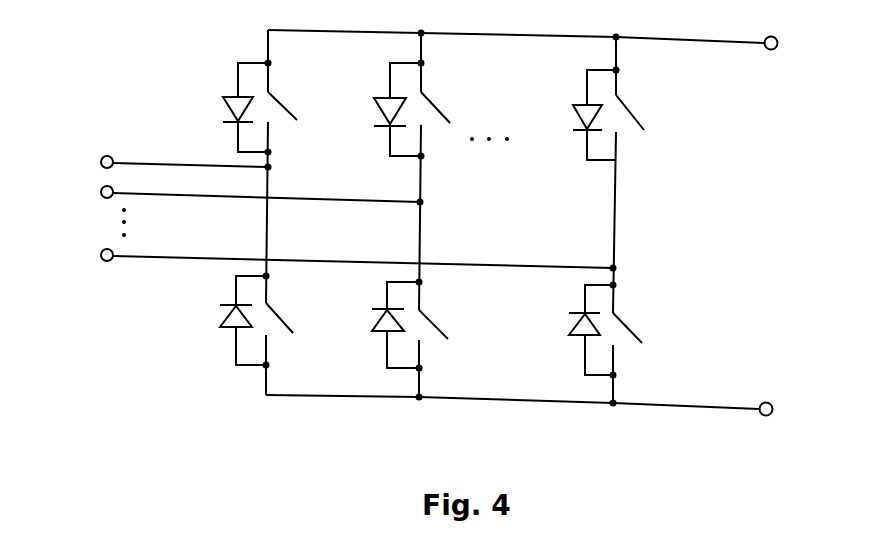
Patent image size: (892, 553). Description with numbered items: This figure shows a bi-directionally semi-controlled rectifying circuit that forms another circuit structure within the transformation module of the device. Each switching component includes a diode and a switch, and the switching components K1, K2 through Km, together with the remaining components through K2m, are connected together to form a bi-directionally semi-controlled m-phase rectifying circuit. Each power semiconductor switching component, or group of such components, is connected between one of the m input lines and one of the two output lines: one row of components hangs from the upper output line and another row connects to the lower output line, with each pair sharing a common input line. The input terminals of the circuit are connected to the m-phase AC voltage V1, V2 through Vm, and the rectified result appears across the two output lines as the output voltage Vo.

The switching component K1 is at (208, 108).
The switching component K2 is at (365, 118).
The switching component Km is at (562, 127).
The switching component K2m is at (557, 334).
The m-phase AC voltage V1 is at (158, 162).
The m-phase AC voltage V2 is at (234, 192).
The m-phase AC voltage Vm is at (330, 254).
The output voltage Vo is at (763, 226).